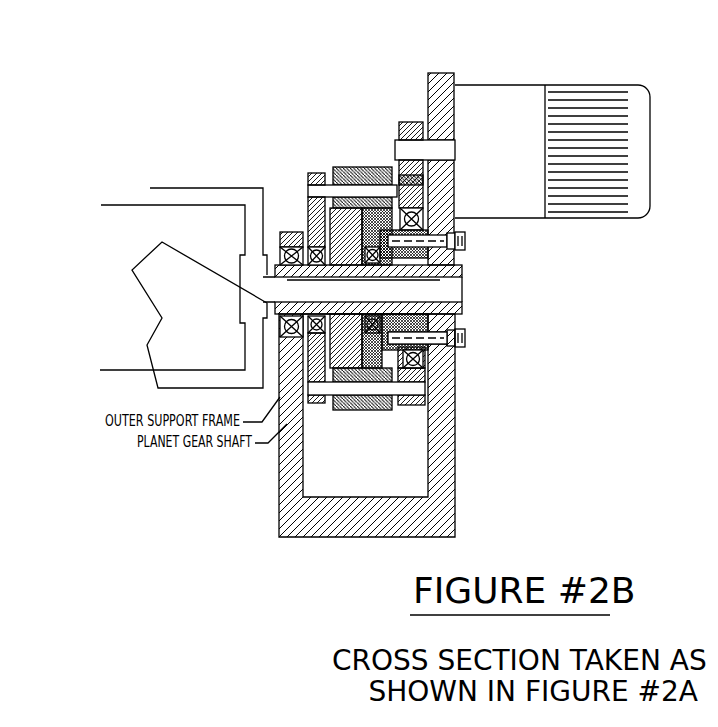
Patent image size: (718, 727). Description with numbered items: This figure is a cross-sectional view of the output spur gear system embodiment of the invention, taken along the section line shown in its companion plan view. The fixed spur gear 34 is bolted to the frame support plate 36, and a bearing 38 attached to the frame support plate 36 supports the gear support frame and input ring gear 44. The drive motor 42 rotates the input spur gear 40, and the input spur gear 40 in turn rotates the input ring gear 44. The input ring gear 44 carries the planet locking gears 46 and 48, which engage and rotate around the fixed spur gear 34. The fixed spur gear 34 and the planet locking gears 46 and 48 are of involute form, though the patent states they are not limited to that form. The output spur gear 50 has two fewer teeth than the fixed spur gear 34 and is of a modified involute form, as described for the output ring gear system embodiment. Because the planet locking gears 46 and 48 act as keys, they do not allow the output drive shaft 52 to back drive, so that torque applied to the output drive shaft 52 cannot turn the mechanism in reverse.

The fixed spur gear 34 is at (377, 197).
The frame support plate 36 is at (452, 362).
The bearing 38 is at (418, 364).
The input spur gear 40 is at (412, 125).
The drive motor 42 is at (510, 87).
The input ring gear 44 is at (413, 400).
The planet locking gear 46 is at (335, 410).
The planet locking gear 48 is at (333, 167).
The output spur gear 50 is at (307, 213).
The output drive shaft 52 is at (283, 287).